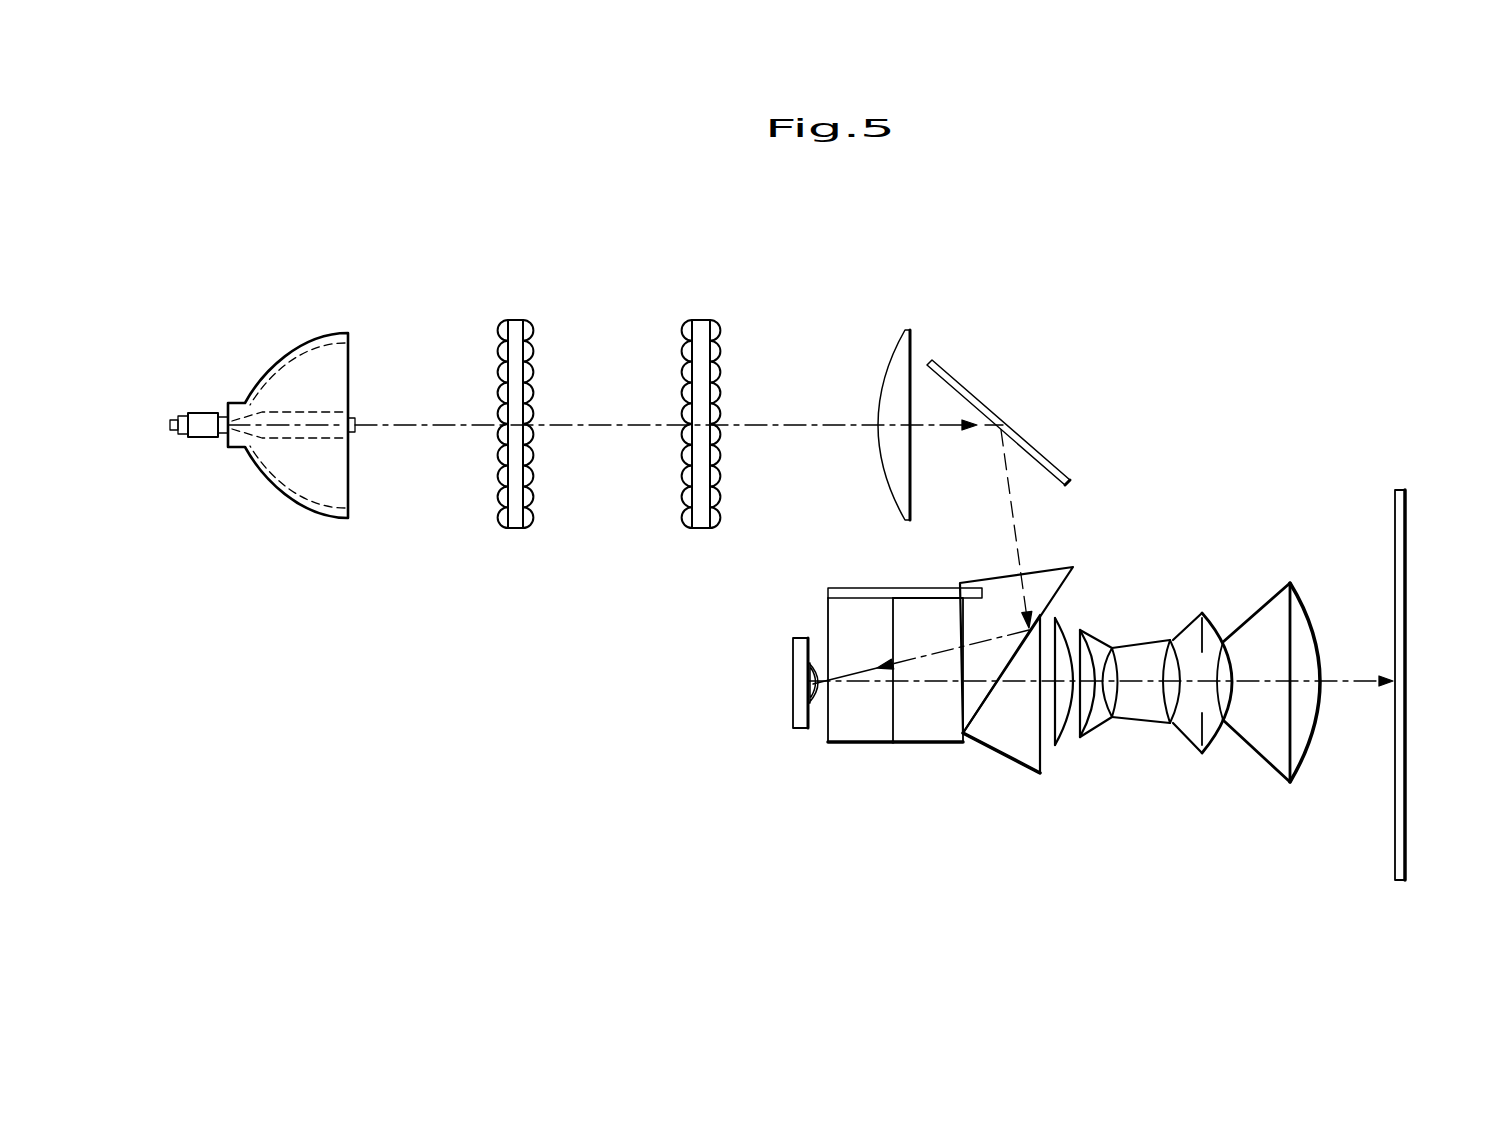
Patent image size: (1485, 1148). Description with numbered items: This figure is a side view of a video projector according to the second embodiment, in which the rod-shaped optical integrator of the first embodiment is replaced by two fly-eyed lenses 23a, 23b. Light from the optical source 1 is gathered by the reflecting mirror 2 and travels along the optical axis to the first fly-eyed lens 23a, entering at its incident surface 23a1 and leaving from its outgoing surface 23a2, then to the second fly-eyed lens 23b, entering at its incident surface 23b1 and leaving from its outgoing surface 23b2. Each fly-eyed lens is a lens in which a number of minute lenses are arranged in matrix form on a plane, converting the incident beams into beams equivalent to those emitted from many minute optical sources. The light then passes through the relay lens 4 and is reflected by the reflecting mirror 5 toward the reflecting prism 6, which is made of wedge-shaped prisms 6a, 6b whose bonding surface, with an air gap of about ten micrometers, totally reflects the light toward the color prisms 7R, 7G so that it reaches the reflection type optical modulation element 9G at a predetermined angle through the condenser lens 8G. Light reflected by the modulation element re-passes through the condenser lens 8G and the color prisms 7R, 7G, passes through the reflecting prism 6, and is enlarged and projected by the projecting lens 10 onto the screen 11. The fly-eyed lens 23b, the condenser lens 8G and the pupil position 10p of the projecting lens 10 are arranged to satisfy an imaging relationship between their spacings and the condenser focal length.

The optical source 1 is at (243, 400).
The reflecting mirror 2 is at (318, 337).
The fly-eyed lens 23a is at (527, 400).
The incident surface 23a1 is at (497, 482).
The outgoing surface 23a2 is at (537, 515).
The fly-eyed lens 23b is at (706, 442).
The incident surface 23b1 is at (682, 332).
The outgoing surface 23b2 is at (697, 320).
The relay lens 4 is at (905, 328).
The reflecting mirror 5 is at (1012, 425).
The reflecting prism 6 is at (1099, 689).
The wedge-shaped prism 6a is at (1043, 585).
The wedge-shaped prism 6b is at (1013, 740).
The color prism 7G is at (845, 742).
The color prism 7R is at (908, 742).
The condenser lens 8G is at (812, 706).
The reflection type optical modulation element 9G is at (798, 710).
The projecting lens 10 is at (1180, 729).
The pupil position 10p is at (1203, 728).
The screen 11 is at (1400, 488).